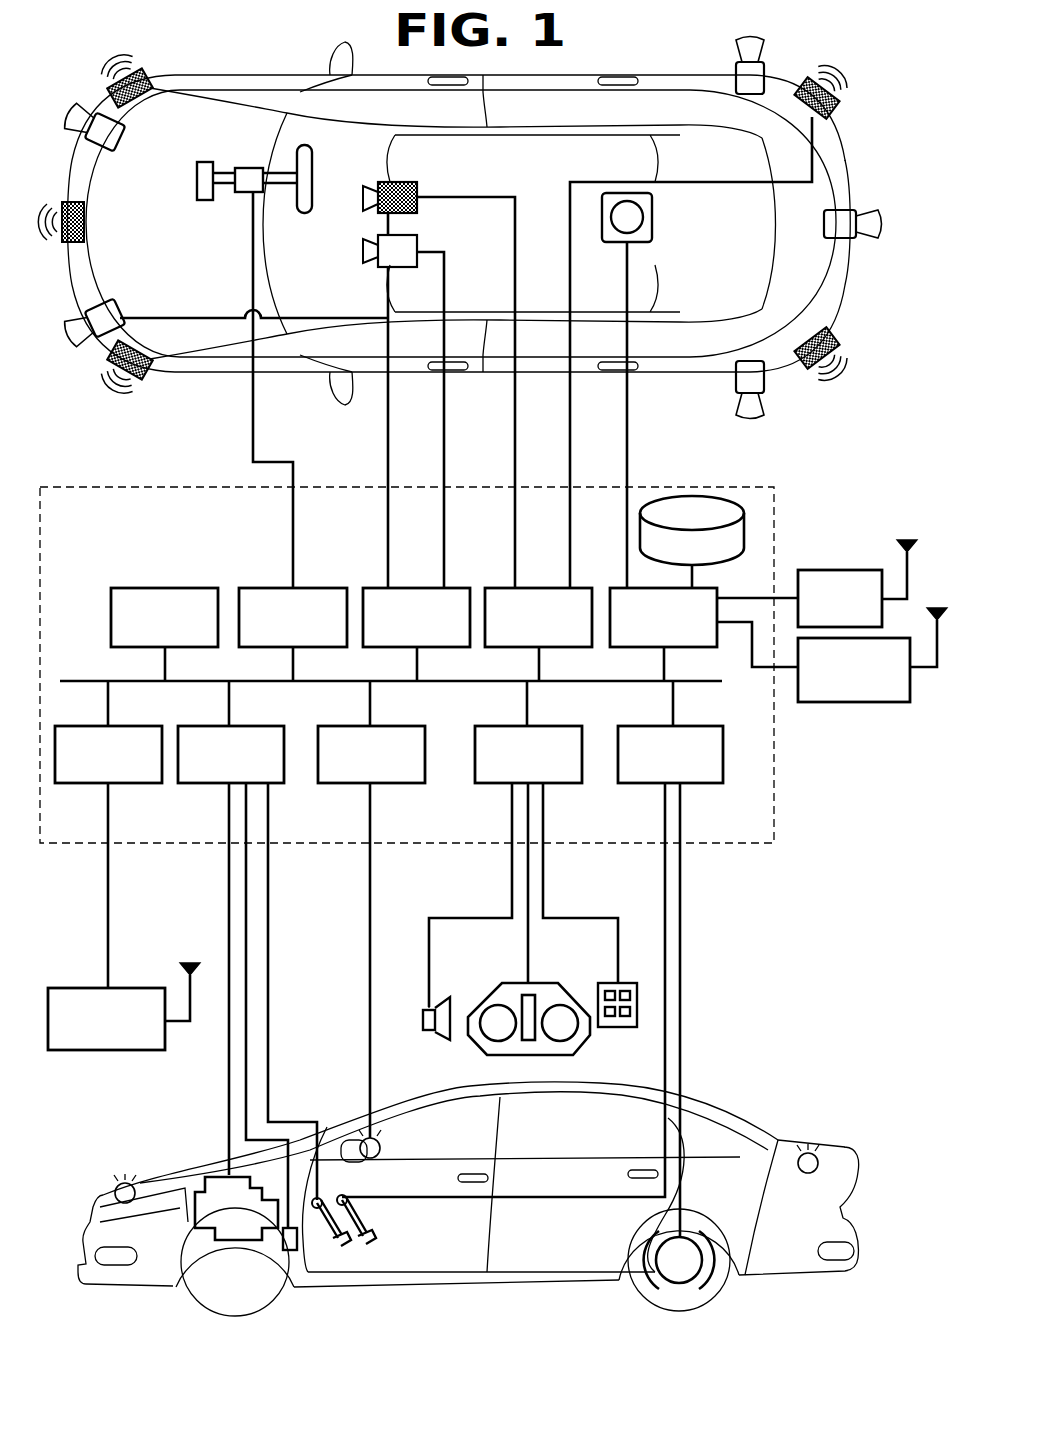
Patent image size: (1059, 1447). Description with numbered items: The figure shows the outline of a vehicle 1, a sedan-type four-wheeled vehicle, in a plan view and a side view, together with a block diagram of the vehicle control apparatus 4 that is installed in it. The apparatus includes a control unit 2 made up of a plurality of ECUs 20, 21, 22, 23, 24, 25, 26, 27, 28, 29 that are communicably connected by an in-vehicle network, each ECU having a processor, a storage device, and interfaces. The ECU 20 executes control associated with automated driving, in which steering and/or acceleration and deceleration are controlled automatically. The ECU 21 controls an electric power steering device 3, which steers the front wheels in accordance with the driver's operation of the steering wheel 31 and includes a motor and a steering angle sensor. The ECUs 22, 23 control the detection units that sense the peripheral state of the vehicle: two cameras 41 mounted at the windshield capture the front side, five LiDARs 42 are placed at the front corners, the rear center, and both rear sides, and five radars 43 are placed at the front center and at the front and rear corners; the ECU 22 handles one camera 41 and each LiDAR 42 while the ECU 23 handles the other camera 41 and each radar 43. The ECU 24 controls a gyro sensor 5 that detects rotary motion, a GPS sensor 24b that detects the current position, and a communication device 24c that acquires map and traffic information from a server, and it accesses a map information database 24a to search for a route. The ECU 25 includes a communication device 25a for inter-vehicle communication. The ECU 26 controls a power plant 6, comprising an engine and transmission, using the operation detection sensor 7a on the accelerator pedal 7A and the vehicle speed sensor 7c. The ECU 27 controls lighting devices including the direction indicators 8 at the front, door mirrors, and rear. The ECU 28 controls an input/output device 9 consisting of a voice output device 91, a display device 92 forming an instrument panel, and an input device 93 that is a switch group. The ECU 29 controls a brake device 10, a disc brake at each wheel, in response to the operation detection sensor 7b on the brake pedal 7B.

The vehicle 1 is at (858, 136).
The control unit 2 is at (752, 845).
The electric power steering device 3 is at (205, 200).
The vehicle control system 4 is at (96, 80).
The gyro sensor 5 is at (652, 217).
The power plant 6 is at (197, 1176).
The operation detection sensor 7a is at (323, 1195).
The accelerator pedal 7A is at (347, 1245).
The operation detection sensor 7b is at (348, 1196).
The brake pedal 7B is at (372, 1232).
The vehicle speed sensor 7c is at (290, 1250).
The direction indicators 8 is at (114, 1190).
The input/output device 9 is at (458, 1058).
The brake device 10 is at (683, 1284).
The ECU 20 is at (200, 588).
The ECU 21 is at (327, 588).
The ECU 22 is at (417, 588).
The ECU 23 is at (544, 588).
The ECU 24 is at (614, 588).
The map information database 24a is at (692, 496).
The GPS sensor 24b is at (860, 570).
The communication device 24c is at (851, 702).
The ECU 25 is at (138, 783).
The communication device 25a is at (110, 1050).
The ECU 26 is at (208, 783).
The ECU 27 is at (406, 783).
The ECU 28 is at (565, 783).
The ECU 29 is at (706, 783).
The steering wheel 31 is at (303, 213).
The camera 41 is at (420, 203).
The LiDAR 42 is at (115, 150).
The radar 43 is at (143, 78).
The voice output device 91 is at (423, 1015).
The display device 92 is at (486, 996).
The input device 93 is at (612, 1027).